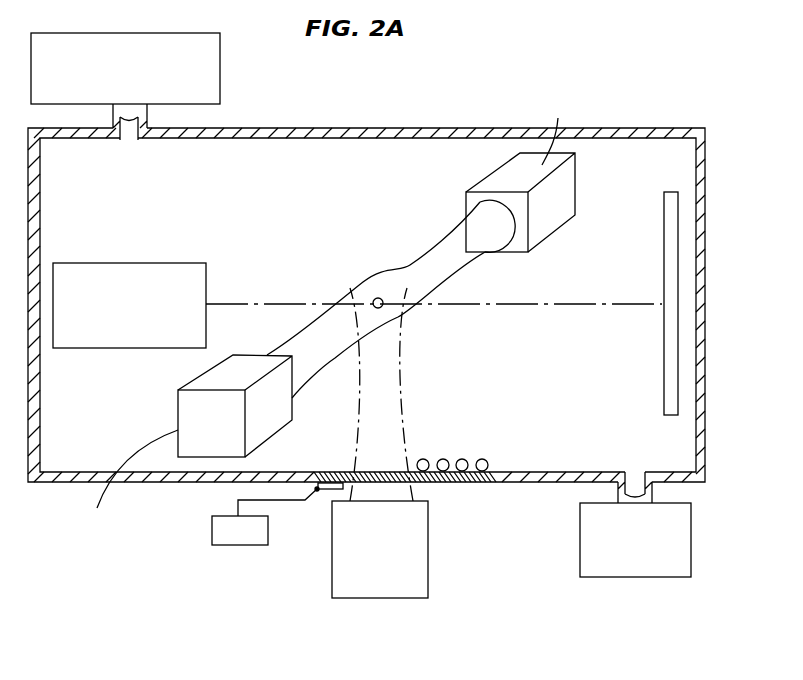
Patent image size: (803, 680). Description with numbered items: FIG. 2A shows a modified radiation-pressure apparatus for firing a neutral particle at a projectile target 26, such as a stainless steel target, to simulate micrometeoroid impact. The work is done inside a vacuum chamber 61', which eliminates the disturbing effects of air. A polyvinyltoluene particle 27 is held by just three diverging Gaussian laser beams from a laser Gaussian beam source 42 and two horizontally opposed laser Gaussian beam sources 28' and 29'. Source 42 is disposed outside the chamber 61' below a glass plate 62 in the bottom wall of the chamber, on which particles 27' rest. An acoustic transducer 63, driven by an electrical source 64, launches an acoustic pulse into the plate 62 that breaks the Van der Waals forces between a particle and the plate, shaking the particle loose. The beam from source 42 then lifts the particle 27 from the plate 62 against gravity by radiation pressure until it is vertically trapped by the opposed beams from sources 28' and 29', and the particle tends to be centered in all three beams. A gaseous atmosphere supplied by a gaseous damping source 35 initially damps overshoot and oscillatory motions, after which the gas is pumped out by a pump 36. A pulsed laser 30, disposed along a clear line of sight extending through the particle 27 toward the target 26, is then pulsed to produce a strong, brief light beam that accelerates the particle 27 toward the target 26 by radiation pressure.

The gaseous damping source 35 is at (220, 78).
The pulsed laser 30 is at (126, 262).
The particle 27 is at (384, 267).
The laser Gaussian beam source 29' is at (549, 145).
The laser Gaussian beam source 28' is at (150, 471).
The projectile target 26 is at (663, 384).
The particles 27' is at (452, 447).
The glass plate 62 is at (468, 484).
The vacuum chamber 61' is at (366, 329).
The laser Gaussian beam source 42 is at (428, 577).
The electrical source 64 is at (222, 531).
The acoustic transducer 63 is at (325, 493).
The pump 36 is at (638, 580).